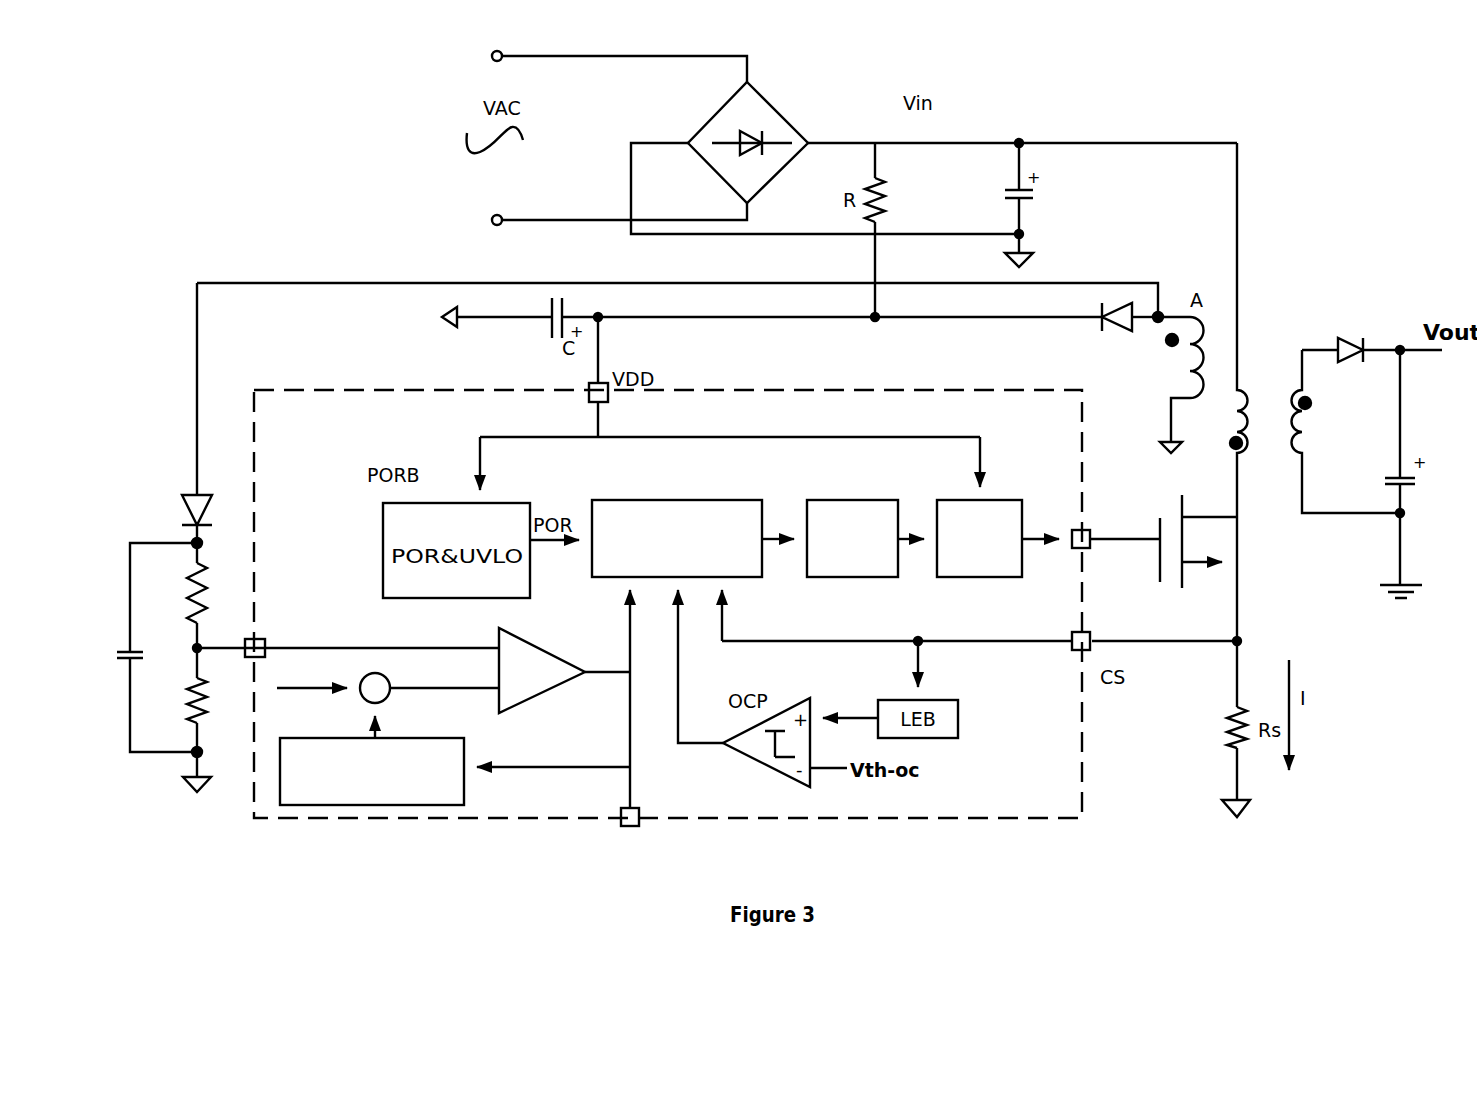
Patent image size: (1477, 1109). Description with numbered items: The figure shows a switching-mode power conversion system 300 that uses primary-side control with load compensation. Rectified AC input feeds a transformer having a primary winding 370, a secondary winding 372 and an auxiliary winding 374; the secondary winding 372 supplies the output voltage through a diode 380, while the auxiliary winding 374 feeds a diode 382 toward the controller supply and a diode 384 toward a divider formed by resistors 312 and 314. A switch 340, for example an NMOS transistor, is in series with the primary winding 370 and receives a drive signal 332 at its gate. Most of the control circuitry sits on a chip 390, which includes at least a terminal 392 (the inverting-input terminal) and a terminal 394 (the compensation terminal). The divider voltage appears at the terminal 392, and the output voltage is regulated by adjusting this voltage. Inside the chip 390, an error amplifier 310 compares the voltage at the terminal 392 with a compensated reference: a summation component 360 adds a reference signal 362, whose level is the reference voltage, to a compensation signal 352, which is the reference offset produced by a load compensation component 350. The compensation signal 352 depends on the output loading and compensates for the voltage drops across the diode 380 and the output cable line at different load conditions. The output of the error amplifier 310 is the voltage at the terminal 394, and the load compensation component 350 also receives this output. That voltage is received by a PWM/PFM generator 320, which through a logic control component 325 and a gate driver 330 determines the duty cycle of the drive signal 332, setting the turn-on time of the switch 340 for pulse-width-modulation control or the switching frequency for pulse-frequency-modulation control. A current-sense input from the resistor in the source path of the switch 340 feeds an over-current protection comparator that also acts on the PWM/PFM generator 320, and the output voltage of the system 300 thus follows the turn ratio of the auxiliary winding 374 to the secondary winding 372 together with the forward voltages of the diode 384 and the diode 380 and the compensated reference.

The switching-mode power conversion system 300 is at (262, 139).
The error amplifier 310 is at (561, 688).
The resistor 312 is at (190, 602).
The resistor 314 is at (192, 712).
The PWM/PFM generator 320 is at (658, 500).
The logic control component 325 is at (832, 500).
The gate driver 330 is at (1026, 506).
The drive signal 332 is at (1032, 546).
The switch 340 is at (1153, 565).
The load compensation component 350 is at (377, 805).
The compensation signal 352 is at (380, 714).
The summation component 360 is at (394, 679).
The reference signal 362 is at (310, 698).
The primary winding 370 is at (1251, 458).
The secondary winding 372 is at (1281, 390).
The auxiliary winding 374 is at (1190, 376).
The diode 380 is at (1346, 364).
The diode 382 is at (1108, 310).
The diode 384 is at (212, 485).
The chip 390 is at (922, 820).
The terminal 392 is at (255, 660).
The terminal 394 is at (620, 822).